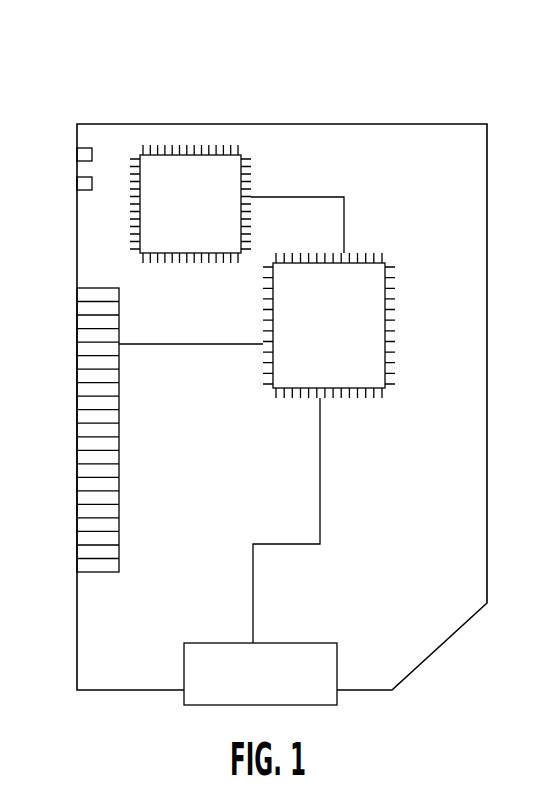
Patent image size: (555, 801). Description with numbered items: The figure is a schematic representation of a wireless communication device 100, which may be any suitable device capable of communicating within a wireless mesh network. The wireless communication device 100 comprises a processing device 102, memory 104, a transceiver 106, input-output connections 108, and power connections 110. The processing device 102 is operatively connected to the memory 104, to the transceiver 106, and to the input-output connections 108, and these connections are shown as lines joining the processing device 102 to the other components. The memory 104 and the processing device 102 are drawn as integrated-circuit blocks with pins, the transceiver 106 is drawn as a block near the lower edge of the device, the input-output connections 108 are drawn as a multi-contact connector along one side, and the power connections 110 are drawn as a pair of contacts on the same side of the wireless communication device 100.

The wireless communication device 100 is at (456, 61).
The processing device 102 is at (345, 342).
The memory 104 is at (206, 211).
The transceiver 106 is at (277, 686).
The input-output connections 108 is at (119, 483).
The power connections 110 is at (72, 138).